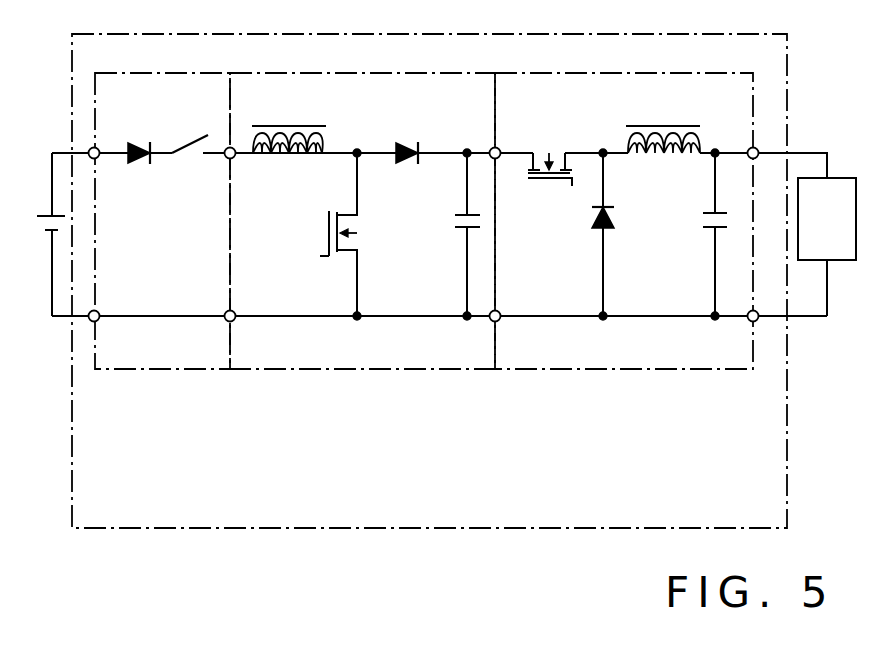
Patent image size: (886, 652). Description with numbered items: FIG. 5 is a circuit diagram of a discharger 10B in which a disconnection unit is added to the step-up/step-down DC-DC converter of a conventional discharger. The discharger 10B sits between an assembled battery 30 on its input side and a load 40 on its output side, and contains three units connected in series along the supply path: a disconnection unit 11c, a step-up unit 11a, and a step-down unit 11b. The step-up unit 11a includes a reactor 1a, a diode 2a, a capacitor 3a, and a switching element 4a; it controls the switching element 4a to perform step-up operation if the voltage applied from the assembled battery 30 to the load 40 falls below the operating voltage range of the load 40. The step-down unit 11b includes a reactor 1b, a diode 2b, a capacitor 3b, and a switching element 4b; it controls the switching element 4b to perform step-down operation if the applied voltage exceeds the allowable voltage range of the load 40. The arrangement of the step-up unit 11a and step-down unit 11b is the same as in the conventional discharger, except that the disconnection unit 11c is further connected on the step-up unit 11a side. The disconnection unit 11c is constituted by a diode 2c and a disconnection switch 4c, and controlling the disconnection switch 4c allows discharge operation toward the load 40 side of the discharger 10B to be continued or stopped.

The discharger 10B is at (72, 503).
The assembled battery 30 is at (46, 212).
The load 40 is at (834, 177).
The step-up unit 11a is at (358, 73).
The step-down unit 11b is at (548, 73).
The disconnection unit 11c is at (172, 73).
The reactor 1a is at (297, 125).
The reactor 1b is at (643, 124).
The diode 2a is at (408, 143).
The diode 2b is at (593, 226).
The diode 2c is at (134, 162).
The capacitor 3a is at (456, 224).
The capacitor 3b is at (703, 224).
The switching element 4a is at (326, 238).
The switching element 4b is at (548, 182).
The disconnection switch 4c is at (199, 158).